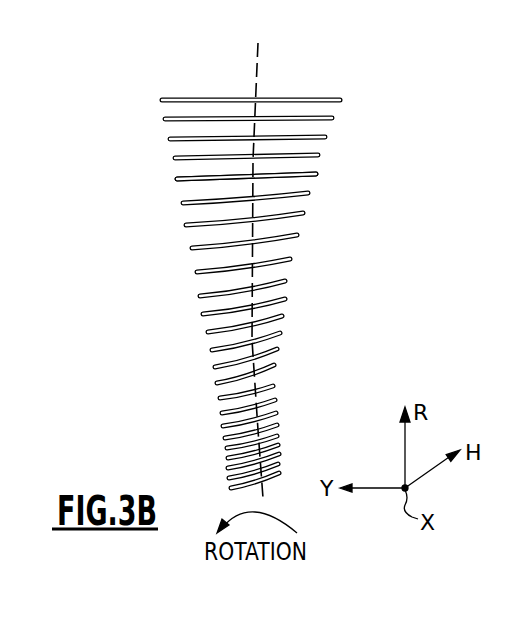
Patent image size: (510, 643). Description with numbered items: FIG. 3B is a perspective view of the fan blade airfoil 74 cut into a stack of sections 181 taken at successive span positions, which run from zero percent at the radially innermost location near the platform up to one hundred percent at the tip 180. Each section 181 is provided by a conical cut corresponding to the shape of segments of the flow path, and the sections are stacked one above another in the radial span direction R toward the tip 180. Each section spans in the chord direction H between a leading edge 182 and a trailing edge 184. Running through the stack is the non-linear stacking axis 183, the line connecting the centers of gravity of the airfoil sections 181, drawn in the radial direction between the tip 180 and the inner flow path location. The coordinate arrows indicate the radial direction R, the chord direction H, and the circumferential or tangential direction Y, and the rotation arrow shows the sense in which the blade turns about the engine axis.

The coil 74 is at (220, 258).
The tip 180 is at (176, 98).
The sections 181 is at (308, 118).
The leading edge 182 is at (165, 175).
The non-linear stacking axis 183 is at (259, 63).
The trailing edge 184 is at (330, 168).